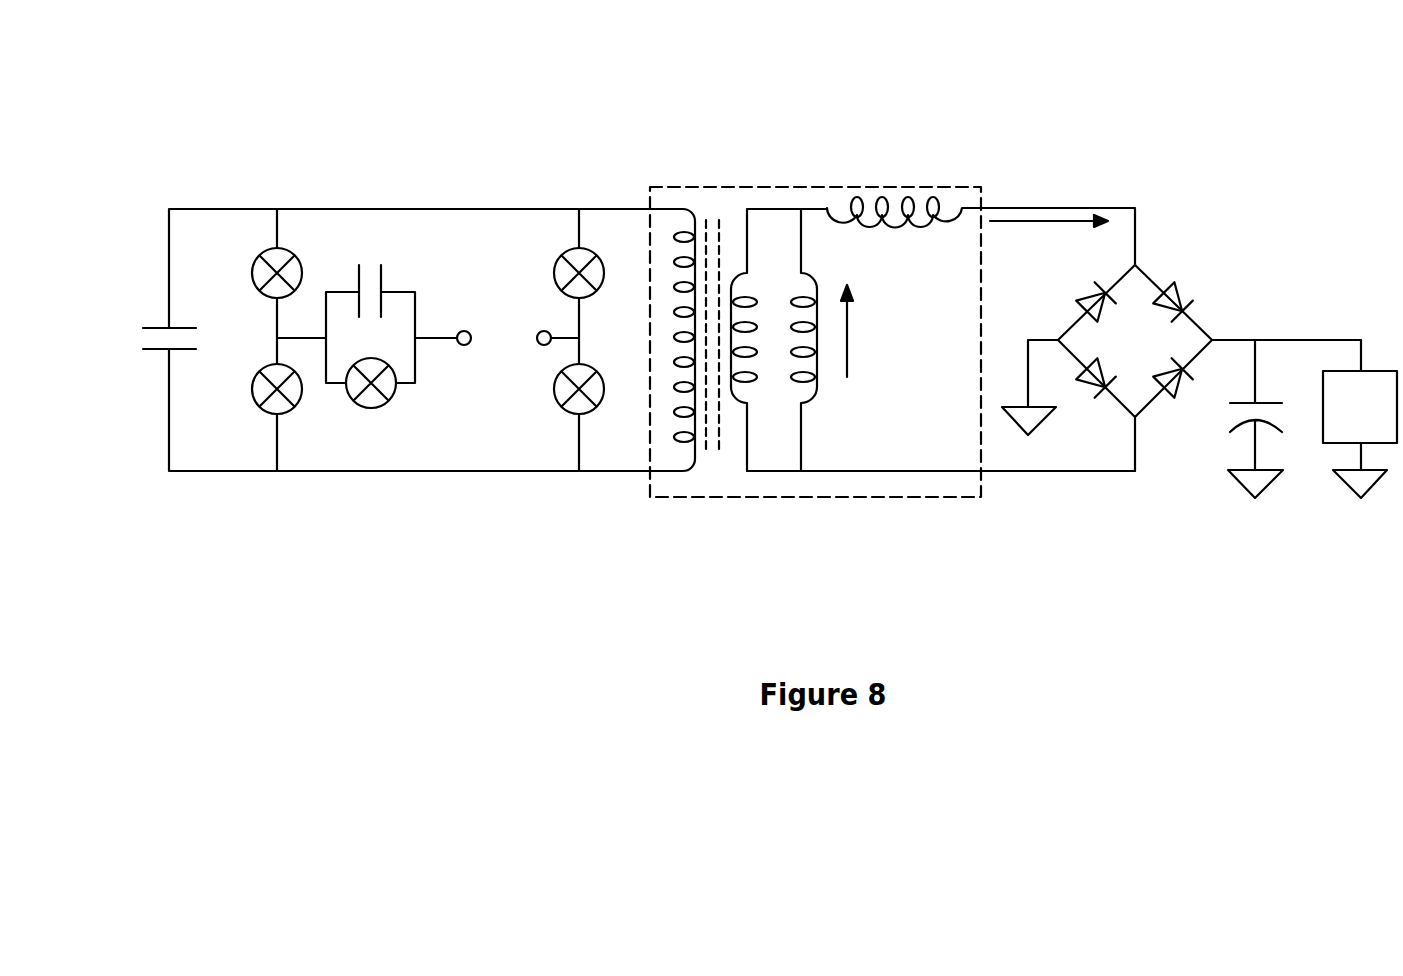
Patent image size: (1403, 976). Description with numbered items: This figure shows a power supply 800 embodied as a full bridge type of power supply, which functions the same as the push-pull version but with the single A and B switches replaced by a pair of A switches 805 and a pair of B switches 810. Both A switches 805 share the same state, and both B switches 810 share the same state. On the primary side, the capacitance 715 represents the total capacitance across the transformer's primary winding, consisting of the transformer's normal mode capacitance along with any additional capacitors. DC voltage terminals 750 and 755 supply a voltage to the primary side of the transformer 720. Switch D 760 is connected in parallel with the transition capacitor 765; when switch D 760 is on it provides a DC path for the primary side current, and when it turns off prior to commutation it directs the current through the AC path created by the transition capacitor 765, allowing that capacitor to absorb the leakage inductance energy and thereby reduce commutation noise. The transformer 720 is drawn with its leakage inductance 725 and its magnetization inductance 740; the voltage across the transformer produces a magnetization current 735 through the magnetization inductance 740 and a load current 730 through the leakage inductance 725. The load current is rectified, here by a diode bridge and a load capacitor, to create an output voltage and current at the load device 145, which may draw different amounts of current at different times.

The power supply 800 is at (737, 50).
The capacitance Cc 715 is at (138, 313).
The A switches 805 is at (248, 262).
The B switches 810 is at (250, 407).
The transition capacitor Ctd 765 is at (397, 266).
The switch D 760 is at (395, 407).
The DC voltage terminal 750 is at (528, 323).
The DC voltage terminal 755 is at (470, 350).
The transformer 720 is at (737, 182).
The leakage inductance 725 is at (917, 200).
The magnetization current 735 is at (892, 330).
The magnetization inductance 740 is at (877, 437).
The load current 730 is at (1055, 217).
The load device 145 is at (1340, 421).